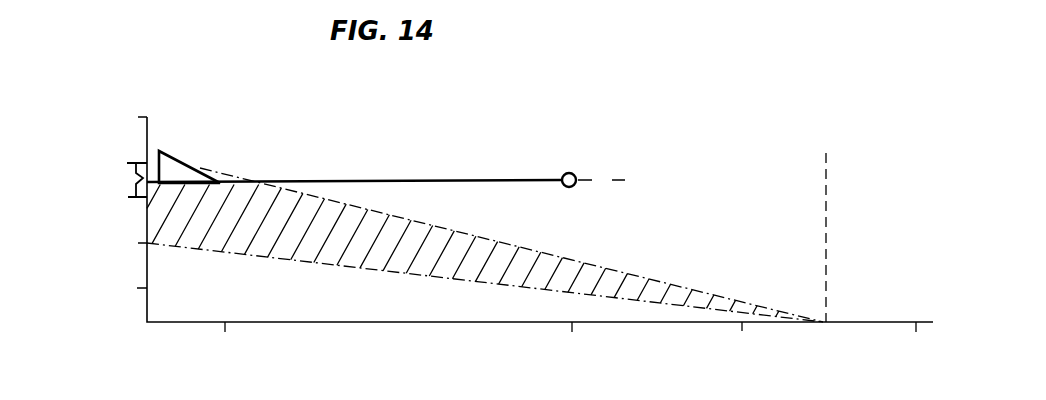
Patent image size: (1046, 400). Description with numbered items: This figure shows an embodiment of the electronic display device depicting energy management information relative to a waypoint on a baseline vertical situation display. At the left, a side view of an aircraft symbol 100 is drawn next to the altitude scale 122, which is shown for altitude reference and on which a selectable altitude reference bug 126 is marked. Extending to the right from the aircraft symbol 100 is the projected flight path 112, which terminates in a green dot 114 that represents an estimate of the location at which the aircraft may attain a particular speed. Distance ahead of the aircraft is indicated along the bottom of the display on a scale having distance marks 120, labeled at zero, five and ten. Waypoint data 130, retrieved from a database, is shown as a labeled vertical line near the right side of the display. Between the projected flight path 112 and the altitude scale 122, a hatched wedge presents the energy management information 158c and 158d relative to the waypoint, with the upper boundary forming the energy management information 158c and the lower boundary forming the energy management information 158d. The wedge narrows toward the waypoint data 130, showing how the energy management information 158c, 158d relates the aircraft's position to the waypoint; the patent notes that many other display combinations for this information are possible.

The aircraft symbol 100 is at (184, 163).
The projected flight path 112 is at (487, 178).
The green dot 114 is at (569, 171).
The distance marks 120 is at (229, 330).
The altitude scale 122 is at (97, 287).
The altitude reference bug 126 is at (128, 197).
The waypoint data 130 is at (828, 114).
The energy management information 158c is at (584, 262).
The energy management information 158d is at (400, 273).